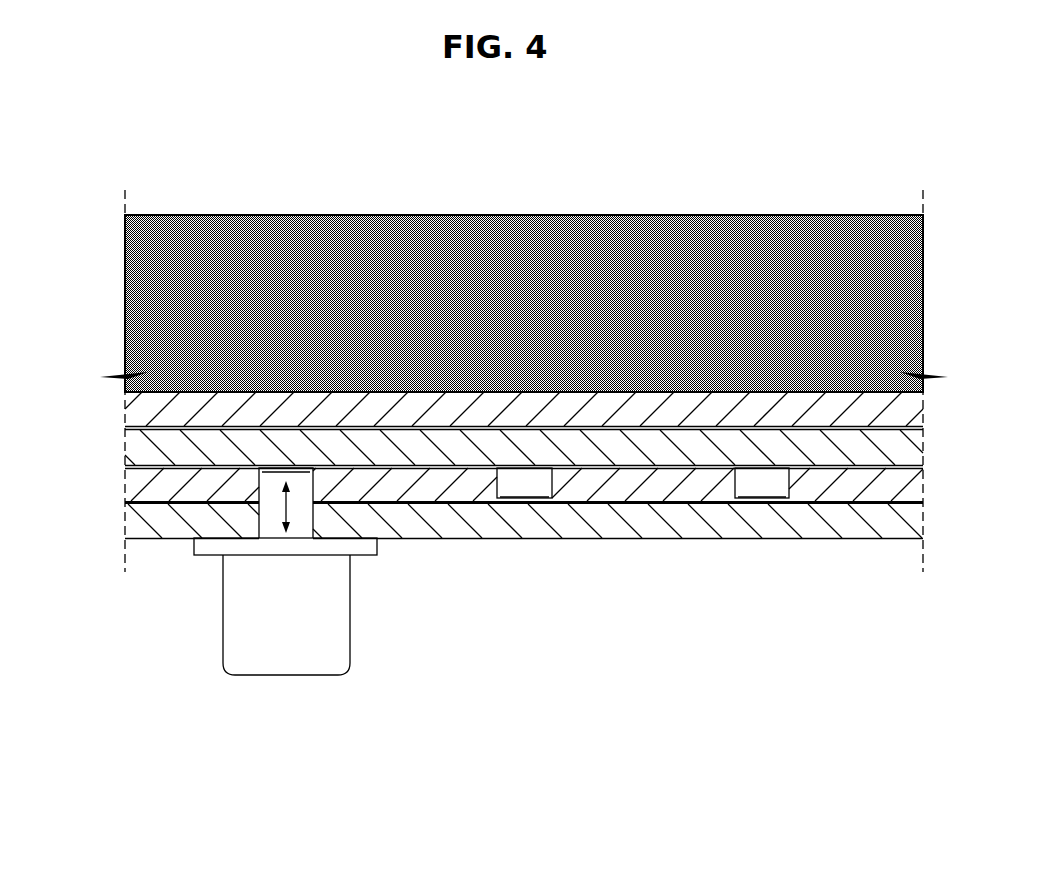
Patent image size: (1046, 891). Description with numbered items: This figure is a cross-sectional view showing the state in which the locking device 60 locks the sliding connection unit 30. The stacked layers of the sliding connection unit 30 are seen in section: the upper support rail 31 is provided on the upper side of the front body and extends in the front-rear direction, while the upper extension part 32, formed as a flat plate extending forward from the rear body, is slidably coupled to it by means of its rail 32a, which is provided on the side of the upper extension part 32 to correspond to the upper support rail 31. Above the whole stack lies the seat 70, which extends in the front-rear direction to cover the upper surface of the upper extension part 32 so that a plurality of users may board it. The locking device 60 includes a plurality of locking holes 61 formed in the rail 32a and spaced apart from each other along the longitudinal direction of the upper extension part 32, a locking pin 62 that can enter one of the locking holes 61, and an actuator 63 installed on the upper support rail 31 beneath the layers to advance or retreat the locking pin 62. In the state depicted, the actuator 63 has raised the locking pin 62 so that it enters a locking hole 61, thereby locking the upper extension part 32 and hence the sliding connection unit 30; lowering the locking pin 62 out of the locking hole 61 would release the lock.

The sliding connection unit 30 is at (823, 561).
The upper support rail 31 is at (660, 452).
The upper extension part 32 is at (455, 412).
The rail 32a is at (415, 540).
The locking device 60 is at (214, 607).
The locking hole 61 is at (272, 470).
The locking pin 62 is at (272, 514).
The actuator 63 is at (237, 636).
The seat 70 is at (618, 228).